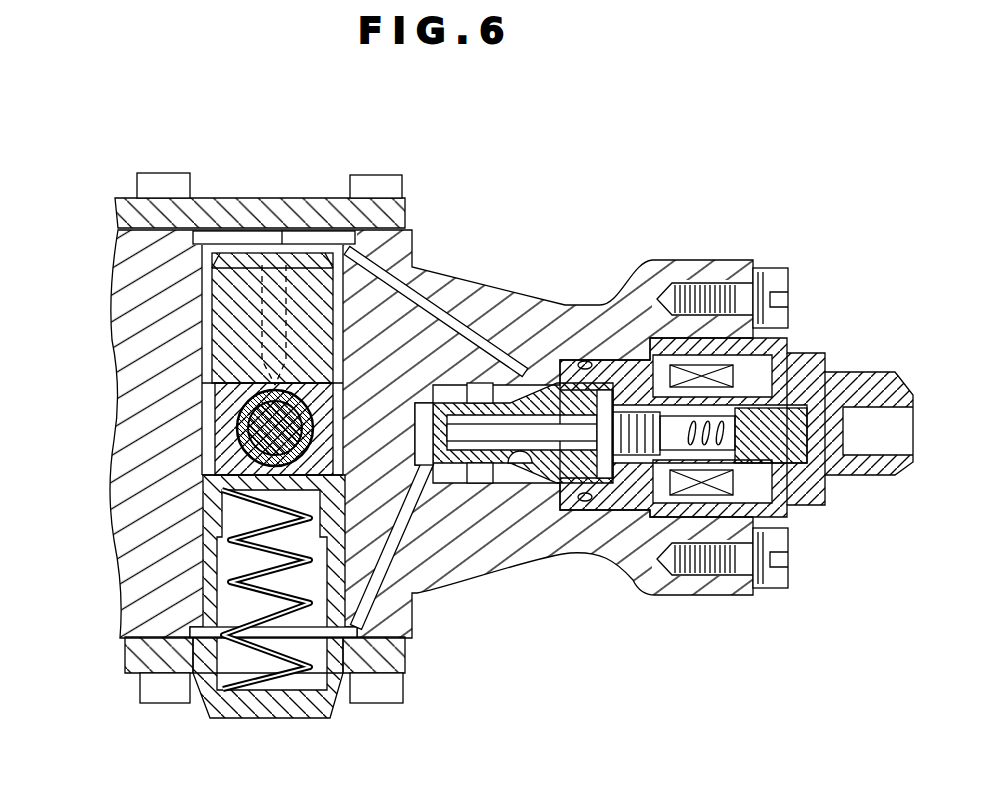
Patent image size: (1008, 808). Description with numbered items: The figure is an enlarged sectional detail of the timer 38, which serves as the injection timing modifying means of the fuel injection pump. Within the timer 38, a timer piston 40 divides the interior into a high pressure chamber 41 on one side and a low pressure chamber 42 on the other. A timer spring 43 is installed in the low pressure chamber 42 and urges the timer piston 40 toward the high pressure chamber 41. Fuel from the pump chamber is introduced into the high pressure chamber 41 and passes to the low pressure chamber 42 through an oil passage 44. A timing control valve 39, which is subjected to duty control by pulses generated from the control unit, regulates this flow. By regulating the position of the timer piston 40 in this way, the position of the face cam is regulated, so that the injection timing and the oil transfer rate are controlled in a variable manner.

The timer 38 is at (518, 293).
The timing control valve 39 is at (630, 372).
The timer piston 40 is at (217, 322).
The high pressure chamber 41 is at (282, 231).
The low pressure chamber 42 is at (315, 690).
The timer spring 43 is at (256, 690).
The oil passage 44 is at (457, 310).